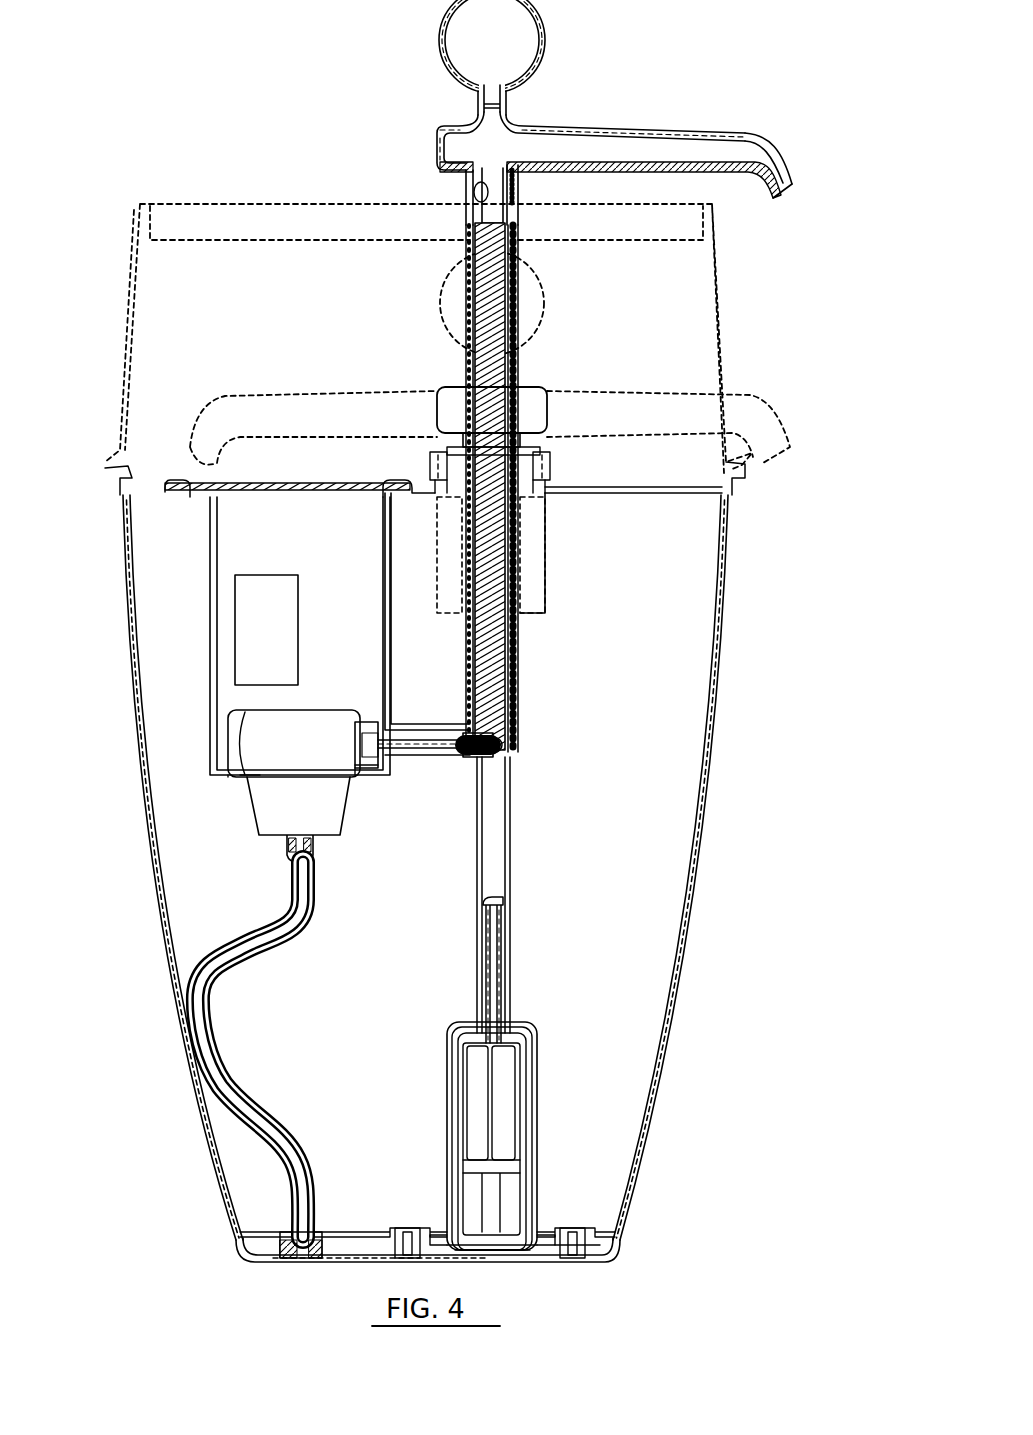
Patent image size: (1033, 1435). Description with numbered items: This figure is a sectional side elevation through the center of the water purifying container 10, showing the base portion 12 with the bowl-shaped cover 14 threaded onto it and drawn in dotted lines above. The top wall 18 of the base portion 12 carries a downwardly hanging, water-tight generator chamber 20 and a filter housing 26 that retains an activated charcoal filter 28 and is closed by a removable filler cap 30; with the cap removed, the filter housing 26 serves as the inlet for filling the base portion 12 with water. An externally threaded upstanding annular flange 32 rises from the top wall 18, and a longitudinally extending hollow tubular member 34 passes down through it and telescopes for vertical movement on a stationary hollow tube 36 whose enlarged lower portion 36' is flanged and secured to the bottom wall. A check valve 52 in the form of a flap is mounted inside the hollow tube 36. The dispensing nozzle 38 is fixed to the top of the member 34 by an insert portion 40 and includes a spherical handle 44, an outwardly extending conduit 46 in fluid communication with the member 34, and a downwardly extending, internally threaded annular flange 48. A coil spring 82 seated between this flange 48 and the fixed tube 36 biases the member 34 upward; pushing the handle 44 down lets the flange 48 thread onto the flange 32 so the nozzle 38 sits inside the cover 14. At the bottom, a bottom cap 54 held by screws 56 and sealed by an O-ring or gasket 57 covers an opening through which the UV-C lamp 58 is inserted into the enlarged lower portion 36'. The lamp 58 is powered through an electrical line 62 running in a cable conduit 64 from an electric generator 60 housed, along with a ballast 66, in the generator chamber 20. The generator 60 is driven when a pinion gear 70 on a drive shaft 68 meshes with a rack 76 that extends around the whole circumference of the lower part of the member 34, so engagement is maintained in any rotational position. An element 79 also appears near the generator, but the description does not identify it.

The container 10 is at (108, 286).
The base portion 12 is at (718, 705).
The cover 14 is at (727, 362).
The top wall 18 is at (680, 490).
The generator chamber 20 is at (213, 620).
The filter housing 26 is at (547, 527).
The filter 28 is at (527, 587).
The filler cap 30 is at (551, 466).
The upstanding annular flange 32 is at (447, 445).
The longitudinally extending hollow tubular member 34 is at (517, 372).
The hollow tube 36 is at (544, 895).
The enlarged lower portion 36' is at (515, 1179).
The dispensing nozzle 38 is at (732, 135).
The insert portion 40 is at (466, 190).
The spherical handle 44 is at (545, 22).
The conduit 46 is at (640, 148).
The downwardly extending annular flange 48 is at (522, 185).
The check valve 52 is at (505, 905).
The bottom cap 54 is at (530, 1263).
The screws 56 is at (575, 1265).
The O-ring or gasket 57 is at (400, 1242).
The UV-C lamp 58 is at (525, 1087).
The electric generator 60 is at (282, 752).
The electrical line 62 is at (297, 1262).
The cable conduit 64 is at (243, 925).
The ballast 66 is at (258, 650).
The drive shaft 68 is at (453, 749).
The pinion gear 70 is at (497, 757).
The rack 76 is at (519, 690).
The motor mount 79 is at (243, 786).
The coil spring 82 is at (490, 360).